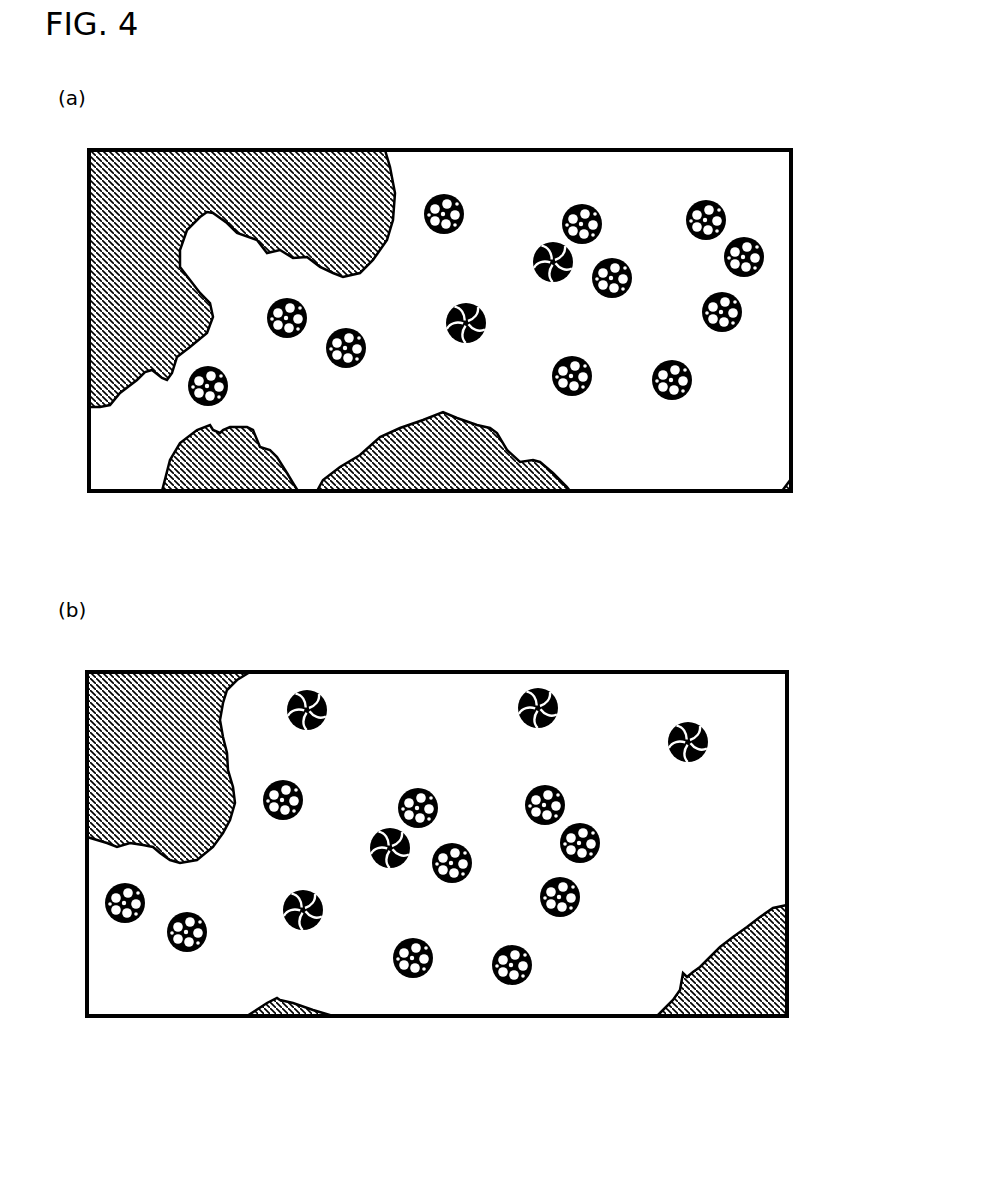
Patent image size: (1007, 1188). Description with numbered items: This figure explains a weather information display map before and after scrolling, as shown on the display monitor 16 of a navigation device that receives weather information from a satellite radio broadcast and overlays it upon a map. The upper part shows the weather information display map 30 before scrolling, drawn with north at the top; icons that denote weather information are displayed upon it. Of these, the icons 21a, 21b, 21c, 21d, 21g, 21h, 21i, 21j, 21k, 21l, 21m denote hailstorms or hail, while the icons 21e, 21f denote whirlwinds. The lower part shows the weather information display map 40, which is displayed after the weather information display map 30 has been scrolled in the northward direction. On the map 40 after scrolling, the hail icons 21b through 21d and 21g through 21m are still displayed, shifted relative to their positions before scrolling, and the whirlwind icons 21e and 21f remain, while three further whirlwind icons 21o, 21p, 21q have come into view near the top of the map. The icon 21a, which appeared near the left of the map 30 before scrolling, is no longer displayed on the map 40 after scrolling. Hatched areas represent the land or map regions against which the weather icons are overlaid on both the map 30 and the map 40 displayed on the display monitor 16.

The display monitor 16 is at (736, 125).
The weather information display map 30 is at (770, 178).
The weather information display map 40 is at (767, 710).
The icon 21a is at (228, 386).
The icon 21b is at (307, 316).
The icon 21c is at (366, 348).
The icon 21d is at (464, 213).
The icon 21e is at (486, 323).
The icon 21f is at (533, 262).
The icon 21g is at (552, 376).
The icon 21h is at (602, 224).
The icon 21i is at (632, 278).
The icon 21j is at (692, 380).
The icon 21k is at (702, 312).
The icon 21l is at (726, 220).
The icon 21m is at (764, 257).
The icon 21o is at (327, 710).
The icon 21p is at (558, 708).
The icon 21q is at (708, 742).